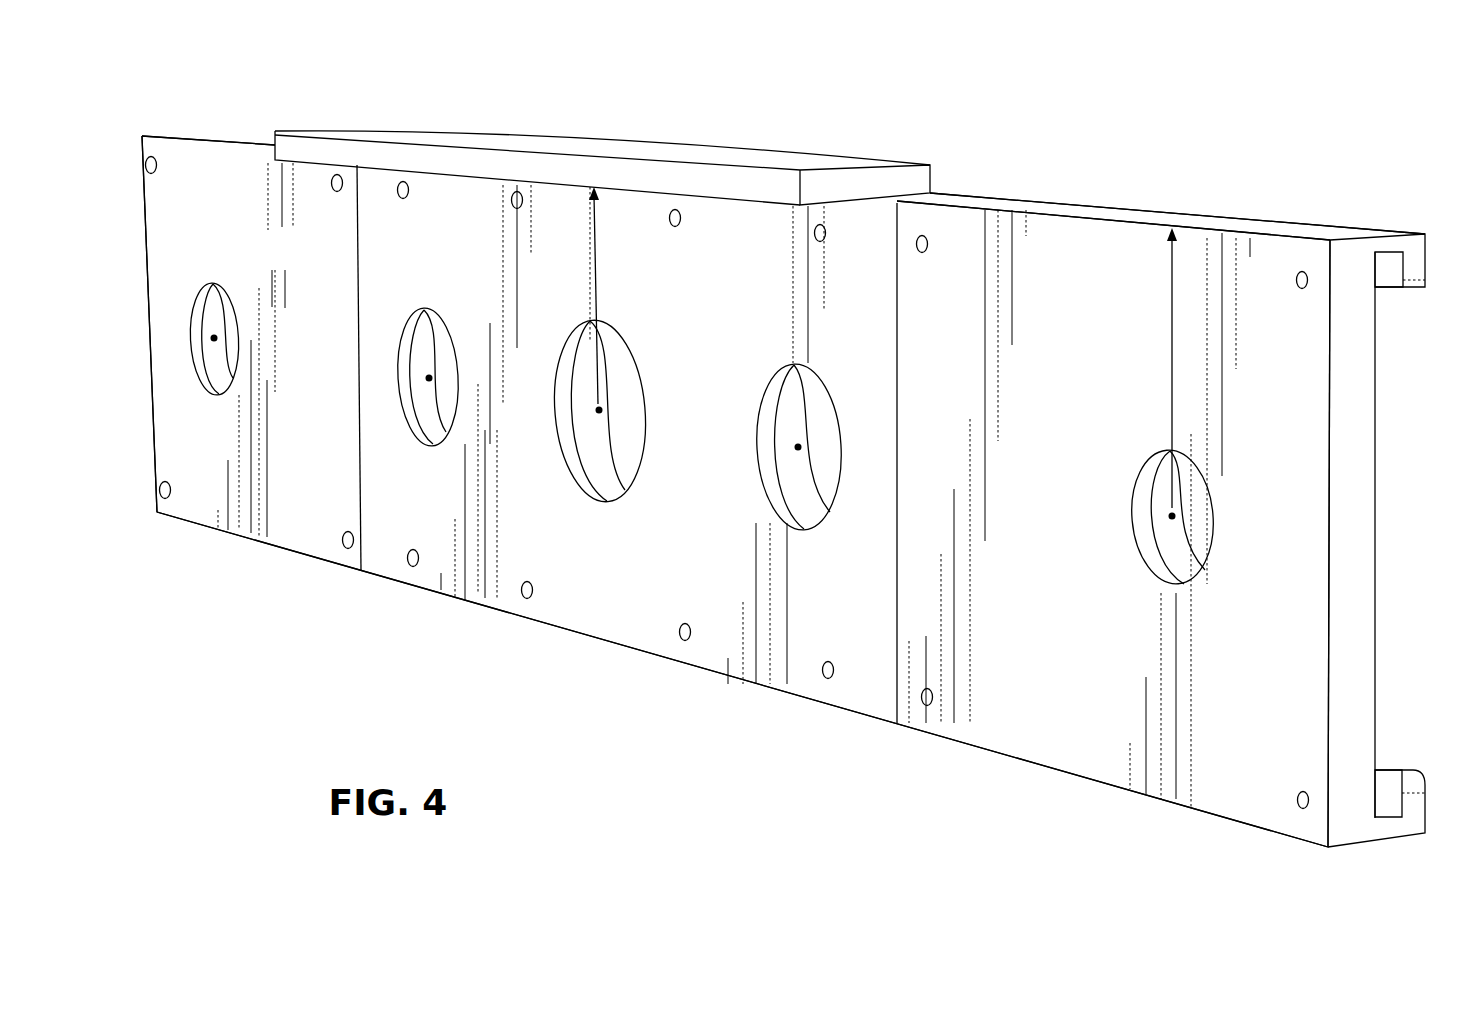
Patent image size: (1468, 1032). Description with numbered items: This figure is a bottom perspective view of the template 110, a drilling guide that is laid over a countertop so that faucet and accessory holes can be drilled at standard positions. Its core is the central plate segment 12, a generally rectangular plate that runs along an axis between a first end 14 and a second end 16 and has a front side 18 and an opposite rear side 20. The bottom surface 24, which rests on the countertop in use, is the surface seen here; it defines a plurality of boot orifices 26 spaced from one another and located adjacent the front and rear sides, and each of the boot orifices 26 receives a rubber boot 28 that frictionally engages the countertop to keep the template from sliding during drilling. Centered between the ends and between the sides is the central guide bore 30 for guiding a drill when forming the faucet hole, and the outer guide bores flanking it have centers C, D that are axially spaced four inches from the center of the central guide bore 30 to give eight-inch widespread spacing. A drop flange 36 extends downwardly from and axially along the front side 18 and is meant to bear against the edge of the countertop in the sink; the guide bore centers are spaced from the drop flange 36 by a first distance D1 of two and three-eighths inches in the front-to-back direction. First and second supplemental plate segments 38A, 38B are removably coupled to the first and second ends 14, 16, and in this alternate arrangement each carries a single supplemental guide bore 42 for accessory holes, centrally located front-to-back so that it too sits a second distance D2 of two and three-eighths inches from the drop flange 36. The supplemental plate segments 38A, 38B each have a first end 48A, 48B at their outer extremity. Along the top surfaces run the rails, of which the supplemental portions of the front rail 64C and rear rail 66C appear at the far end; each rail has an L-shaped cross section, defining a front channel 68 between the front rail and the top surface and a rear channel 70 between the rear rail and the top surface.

The template 110 is at (1153, 133).
The central plate segment 12 is at (680, 141).
The first end 14 is at (353, 233).
The second end 16 is at (898, 290).
The front side 18 is at (830, 157).
The rear side 20 is at (625, 647).
The bottom surface 24 is at (572, 213).
The boot orifices 26 is at (517, 192).
The rubber boot 28 is at (826, 670).
The central guide bore 30 is at (602, 486).
The drop flange 36 is at (740, 150).
The first supplemental plate segment 38A is at (173, 138).
The second supplemental plate segment 38B is at (1282, 223).
The supplemental guide bore 42 is at (203, 382).
The first end 48A is at (150, 442).
The first end 48B is at (1353, 627).
The front rail 64C is at (1380, 230).
The rear rail 66C is at (1370, 840).
The front channel 68 is at (1385, 254).
The rear channel 70 is at (1383, 784).
The center C is at (423, 447).
The center D is at (800, 452).
The first distance D1 is at (595, 298).
The second distance D2 is at (1170, 363).